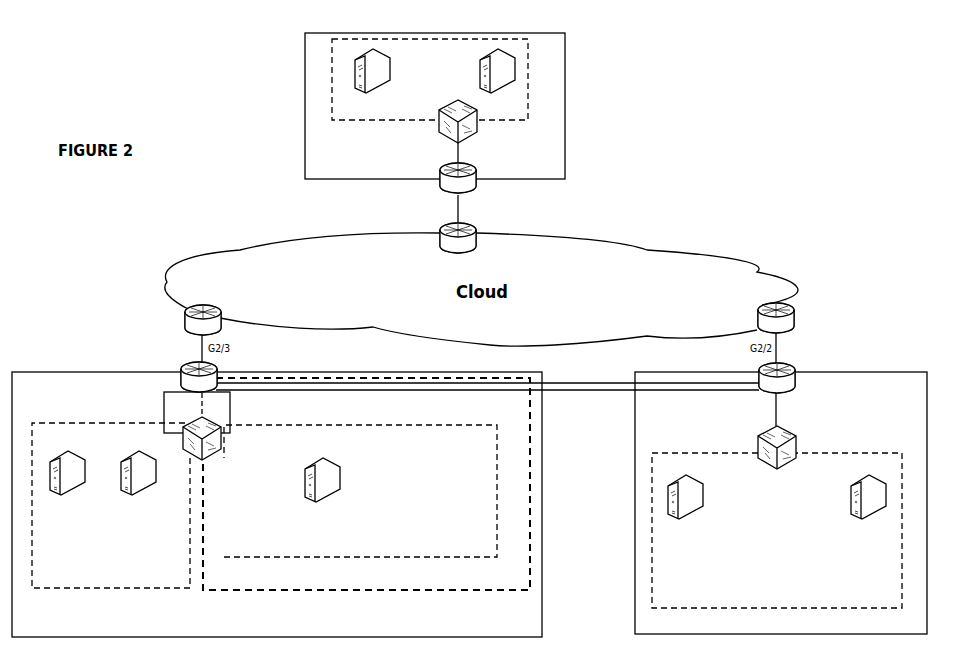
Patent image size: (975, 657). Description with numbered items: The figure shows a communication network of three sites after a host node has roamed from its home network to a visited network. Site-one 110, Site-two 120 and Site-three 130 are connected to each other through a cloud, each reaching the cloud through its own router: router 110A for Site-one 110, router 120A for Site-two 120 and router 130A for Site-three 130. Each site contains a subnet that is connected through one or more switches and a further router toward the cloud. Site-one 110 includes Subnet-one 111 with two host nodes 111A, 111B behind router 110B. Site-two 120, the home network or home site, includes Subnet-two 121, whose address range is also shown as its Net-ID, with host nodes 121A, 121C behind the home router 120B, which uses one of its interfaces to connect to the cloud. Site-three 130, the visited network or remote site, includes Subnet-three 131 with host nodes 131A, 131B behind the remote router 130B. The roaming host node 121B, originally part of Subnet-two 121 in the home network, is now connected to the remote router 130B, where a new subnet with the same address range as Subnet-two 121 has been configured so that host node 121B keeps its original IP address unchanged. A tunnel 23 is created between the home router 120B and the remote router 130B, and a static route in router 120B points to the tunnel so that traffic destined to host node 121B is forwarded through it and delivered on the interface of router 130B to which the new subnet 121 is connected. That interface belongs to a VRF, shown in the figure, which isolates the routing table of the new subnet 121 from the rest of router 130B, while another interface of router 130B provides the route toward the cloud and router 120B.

The tunnel 23 is at (587, 372).
The Site-1 110 is at (455, 113).
The router R-1 110A is at (482, 220).
The router R-100 110B is at (443, 167).
The Subnet-1 111 is at (444, 79).
The host node 111A is at (372, 66).
The host node 111B is at (518, 106).
The Site-2 120 is at (635, 425).
The router R-2 120A is at (792, 310).
The router R-200 120B is at (792, 367).
The Subnet-2 121 is at (563, 508).
The host node 121A is at (685, 507).
The roaming host node 121B is at (386, 481).
The host node 121C is at (868, 507).
The Site-3 130 is at (542, 580).
The router R-3 130A is at (222, 317).
The router R-300 130B is at (215, 367).
The Subnet-3 131 is at (111, 491).
The host node 131A is at (67, 484).
The host node 131B is at (138, 484).